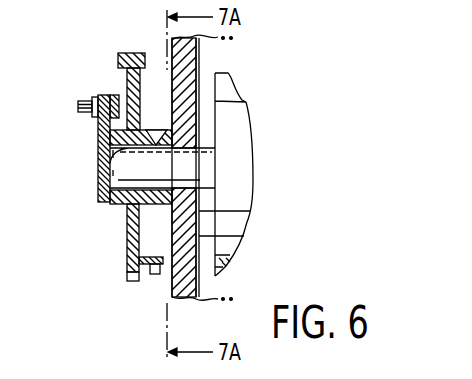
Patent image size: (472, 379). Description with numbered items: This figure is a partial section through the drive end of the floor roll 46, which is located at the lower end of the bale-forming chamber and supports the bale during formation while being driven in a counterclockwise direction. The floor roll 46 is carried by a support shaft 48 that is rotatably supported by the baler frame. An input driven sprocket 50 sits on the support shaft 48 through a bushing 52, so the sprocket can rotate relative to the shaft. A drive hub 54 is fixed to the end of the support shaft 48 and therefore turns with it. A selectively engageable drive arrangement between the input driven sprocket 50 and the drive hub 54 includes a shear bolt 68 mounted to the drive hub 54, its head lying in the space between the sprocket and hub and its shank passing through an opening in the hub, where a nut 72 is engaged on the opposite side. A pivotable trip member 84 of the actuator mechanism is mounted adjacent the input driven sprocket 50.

The floor roll 46 is at (255, 137).
The support shaft 48 is at (125, 173).
The input driven sprocket 50 is at (127, 230).
The bushing 52 is at (100, 167).
The drive hub 54 is at (97, 122).
The shear bolt 68 is at (114, 88).
The nut 72 is at (91, 96).
The trip member 84 is at (138, 290).